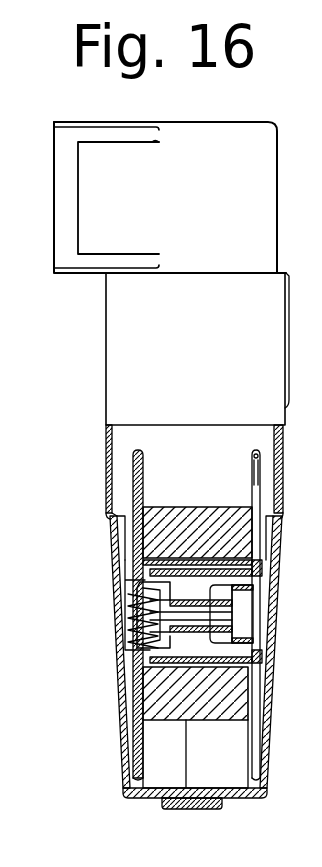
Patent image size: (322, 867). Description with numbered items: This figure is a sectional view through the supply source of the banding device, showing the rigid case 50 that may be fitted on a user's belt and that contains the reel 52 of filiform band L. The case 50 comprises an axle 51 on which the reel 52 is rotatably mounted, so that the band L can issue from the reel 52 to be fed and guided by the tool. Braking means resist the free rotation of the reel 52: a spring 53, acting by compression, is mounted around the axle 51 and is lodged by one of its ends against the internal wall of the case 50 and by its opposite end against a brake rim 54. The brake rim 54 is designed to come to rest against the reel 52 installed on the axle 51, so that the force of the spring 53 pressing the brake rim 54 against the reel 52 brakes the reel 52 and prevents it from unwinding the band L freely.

The rigid case 50 is at (106, 458).
The filiform band L is at (160, 532).
The spring 53 is at (143, 590).
The axle 51 is at (145, 628).
The brake rim 54 is at (140, 650).
The reel 52 is at (140, 703).